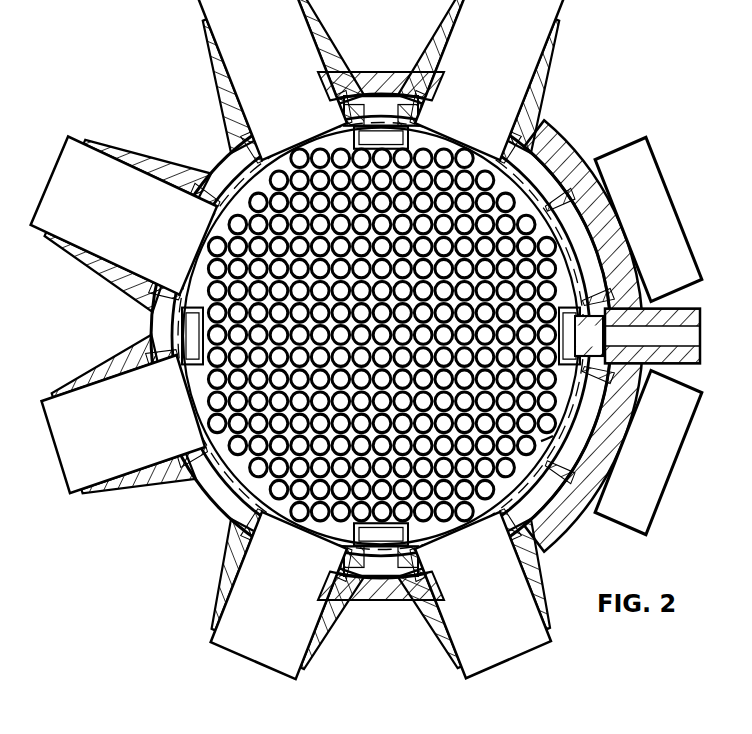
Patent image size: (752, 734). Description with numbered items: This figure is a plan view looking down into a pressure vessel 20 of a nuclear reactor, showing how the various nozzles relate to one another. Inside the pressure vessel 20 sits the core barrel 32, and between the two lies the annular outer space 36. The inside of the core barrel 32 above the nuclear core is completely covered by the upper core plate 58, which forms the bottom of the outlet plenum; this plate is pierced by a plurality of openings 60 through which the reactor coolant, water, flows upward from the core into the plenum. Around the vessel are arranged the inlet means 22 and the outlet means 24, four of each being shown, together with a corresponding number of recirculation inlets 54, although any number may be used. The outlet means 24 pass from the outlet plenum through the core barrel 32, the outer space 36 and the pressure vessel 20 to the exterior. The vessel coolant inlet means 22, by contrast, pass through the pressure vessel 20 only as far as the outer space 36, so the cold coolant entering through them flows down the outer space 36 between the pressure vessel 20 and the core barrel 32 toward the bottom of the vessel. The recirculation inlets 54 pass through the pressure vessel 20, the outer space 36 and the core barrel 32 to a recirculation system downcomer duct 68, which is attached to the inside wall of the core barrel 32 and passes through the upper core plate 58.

The pressure vessel 20 is at (483, 594).
The inlet means 22 is at (123, 424).
The outlet means 24 is at (279, 594).
The core barrel 32 is at (397, 336).
The annular outer space 36 is at (381, 335).
The recirculation inlets 54 is at (589, 336).
The upper core plate 58 is at (547, 438).
The openings 60 is at (381, 335).
The downcomer duct 68 is at (569, 336).